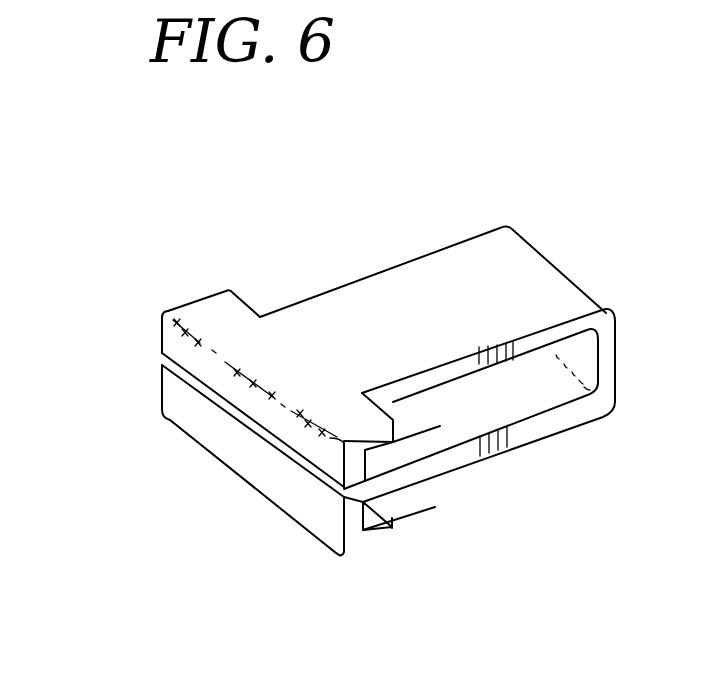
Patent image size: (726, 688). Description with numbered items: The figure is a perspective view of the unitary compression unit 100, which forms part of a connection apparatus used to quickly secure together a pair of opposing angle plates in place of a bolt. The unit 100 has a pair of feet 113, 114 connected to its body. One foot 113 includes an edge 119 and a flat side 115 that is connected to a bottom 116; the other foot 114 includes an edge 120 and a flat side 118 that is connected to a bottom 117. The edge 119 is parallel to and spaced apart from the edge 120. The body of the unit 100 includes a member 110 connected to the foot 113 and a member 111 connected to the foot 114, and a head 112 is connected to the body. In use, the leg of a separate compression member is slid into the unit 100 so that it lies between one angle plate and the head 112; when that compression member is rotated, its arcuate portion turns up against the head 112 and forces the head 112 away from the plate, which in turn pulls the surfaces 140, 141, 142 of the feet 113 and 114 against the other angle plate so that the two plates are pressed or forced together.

The compression unit 100 is at (419, 240).
The member 110 is at (389, 272).
The member 111 is at (578, 418).
The head 112 is at (618, 356).
The foot 113 is at (190, 290).
The foot 114 is at (424, 546).
The flat side 115 is at (297, 393).
The bottom 116 is at (168, 335).
The bottom 117 is at (167, 396).
The flat side 118 is at (370, 553).
The edge 119 is at (225, 362).
The edge 120 is at (222, 414).
The surface 140 is at (238, 298).
The surface 141 is at (393, 420).
The surface 142 is at (390, 518).